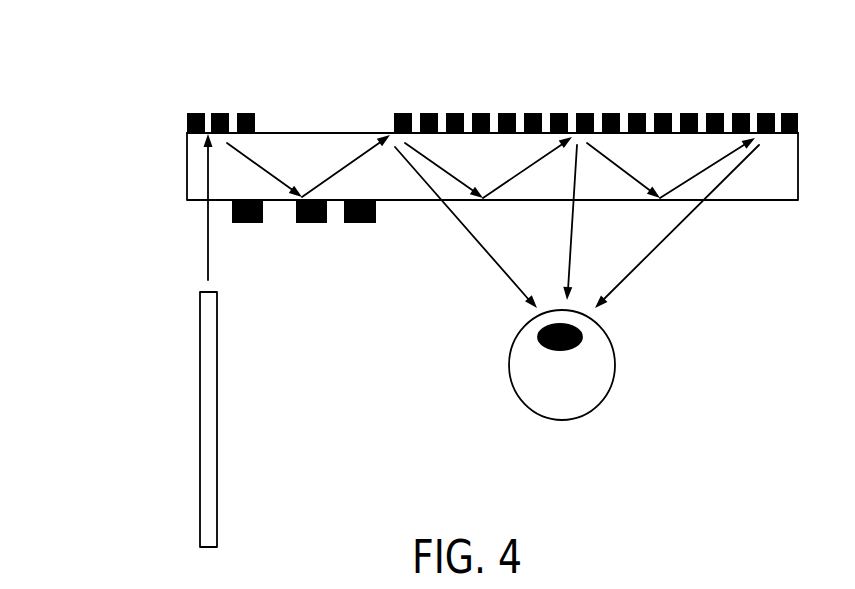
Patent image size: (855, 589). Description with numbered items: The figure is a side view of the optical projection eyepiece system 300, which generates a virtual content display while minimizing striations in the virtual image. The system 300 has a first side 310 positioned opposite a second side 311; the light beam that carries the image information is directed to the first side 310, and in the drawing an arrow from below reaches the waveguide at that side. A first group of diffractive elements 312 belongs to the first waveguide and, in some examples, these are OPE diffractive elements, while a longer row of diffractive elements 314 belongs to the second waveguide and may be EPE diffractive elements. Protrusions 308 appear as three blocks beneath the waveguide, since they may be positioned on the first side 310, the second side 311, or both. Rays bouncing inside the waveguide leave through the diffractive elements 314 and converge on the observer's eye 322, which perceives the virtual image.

The optical projection eyepiece system 300 is at (134, 66).
The protrusions 308 is at (378, 232).
The first side 310 is at (776, 212).
The second side 311 is at (292, 122).
The diffractive elements 312 is at (262, 98).
The diffractive elements 314 is at (797, 108).
The observer's eye 322 is at (593, 426).